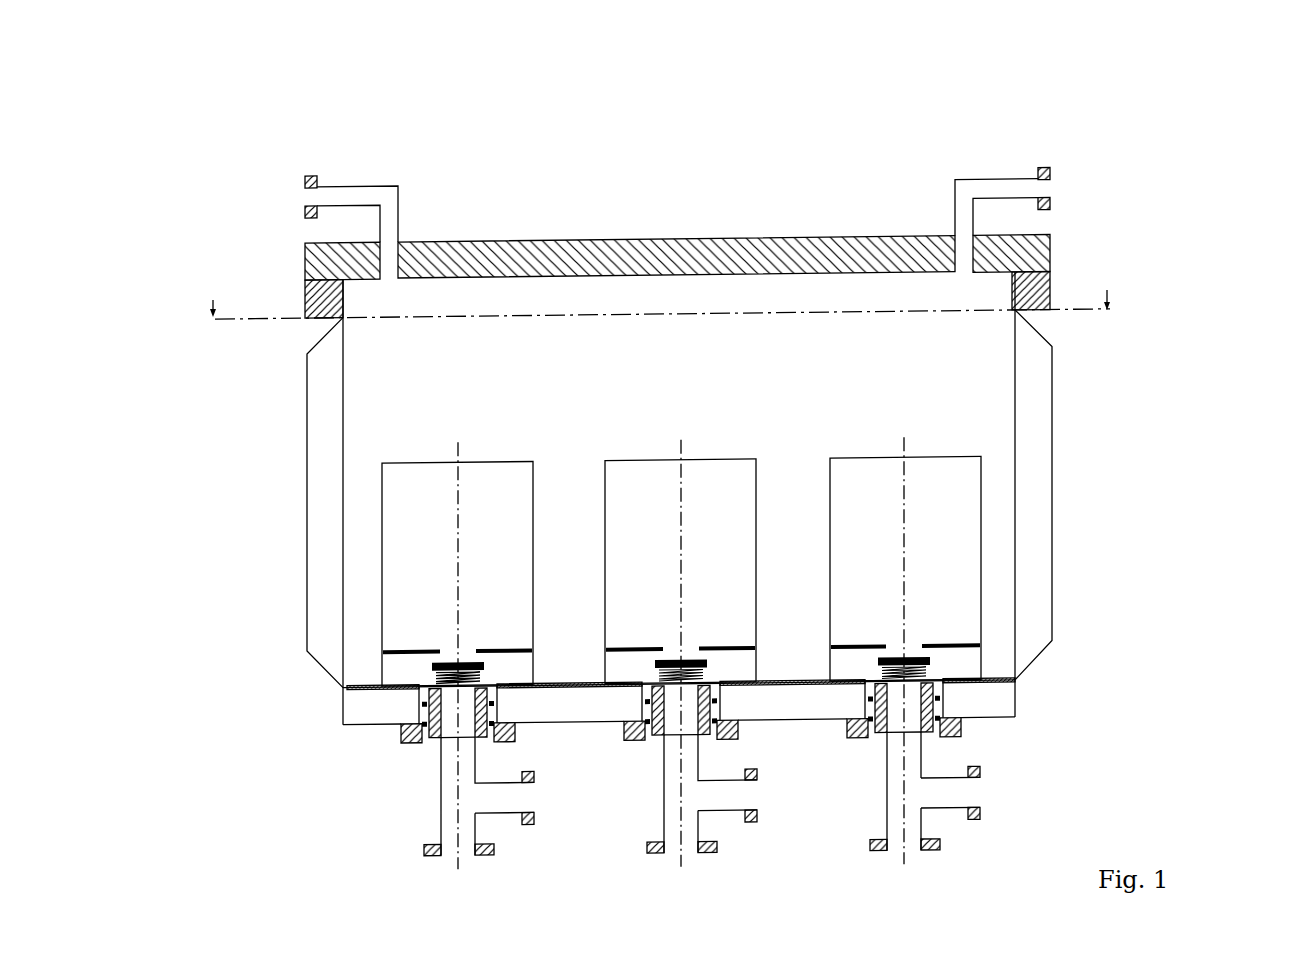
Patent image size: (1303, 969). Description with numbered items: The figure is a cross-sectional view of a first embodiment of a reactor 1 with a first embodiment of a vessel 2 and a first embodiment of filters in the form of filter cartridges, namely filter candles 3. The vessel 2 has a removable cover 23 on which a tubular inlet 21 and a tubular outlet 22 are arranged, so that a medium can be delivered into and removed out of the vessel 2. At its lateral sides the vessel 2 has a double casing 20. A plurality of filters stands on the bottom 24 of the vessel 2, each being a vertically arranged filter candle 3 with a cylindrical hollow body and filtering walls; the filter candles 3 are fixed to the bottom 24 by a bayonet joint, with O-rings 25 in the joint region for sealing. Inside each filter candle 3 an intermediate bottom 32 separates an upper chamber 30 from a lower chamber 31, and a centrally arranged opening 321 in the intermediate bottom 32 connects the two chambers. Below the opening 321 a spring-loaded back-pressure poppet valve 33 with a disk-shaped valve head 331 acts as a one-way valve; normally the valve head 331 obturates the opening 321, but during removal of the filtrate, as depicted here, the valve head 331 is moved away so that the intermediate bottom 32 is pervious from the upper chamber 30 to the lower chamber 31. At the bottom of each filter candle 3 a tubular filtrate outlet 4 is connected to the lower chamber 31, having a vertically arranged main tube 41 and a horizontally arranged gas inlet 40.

The reactor 1 is at (681, 490).
The vessel 2 is at (615, 384).
The filter candle 3 is at (684, 647).
The filtrate outlet 4 is at (686, 719).
The double casing 20 is at (327, 608).
The tubular inlet 21 is at (388, 192).
The tubular outlet 22 is at (963, 190).
The removable cover 23 is at (600, 242).
The bottom 24 is at (590, 705).
The O-rings 25 is at (423, 725).
The upper chamber 30 is at (1013, 646).
The lower chamber 31 is at (962, 664).
The intermediate bottom 32 is at (977, 645).
The spring-loaded back-pressure poppet valve 33 is at (908, 657).
The opening 321 is at (877, 657).
The valve head 331 is at (902, 668).
The gas inlet 40 is at (958, 793).
The main tube 41 is at (457, 848).